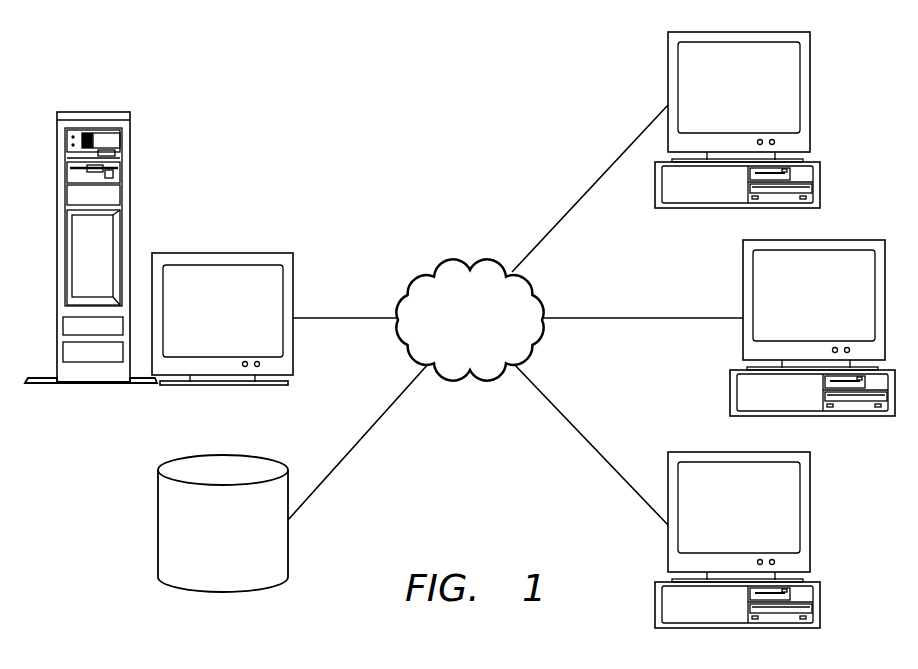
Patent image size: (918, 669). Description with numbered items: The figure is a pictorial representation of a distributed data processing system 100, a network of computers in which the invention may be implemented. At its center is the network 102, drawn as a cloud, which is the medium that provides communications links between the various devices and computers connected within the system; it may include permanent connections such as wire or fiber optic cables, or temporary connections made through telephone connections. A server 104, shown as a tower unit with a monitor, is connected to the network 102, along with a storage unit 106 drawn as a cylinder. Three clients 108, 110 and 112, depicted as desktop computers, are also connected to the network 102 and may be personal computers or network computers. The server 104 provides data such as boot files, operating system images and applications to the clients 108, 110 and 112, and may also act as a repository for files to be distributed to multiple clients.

The distributed data processing system 100 is at (315, 83).
The network 102 is at (490, 348).
The server 104 is at (242, 322).
The storage unit 106 is at (242, 539).
The client 108 is at (758, 102).
The client 110 is at (834, 314).
The client 112 is at (758, 524).